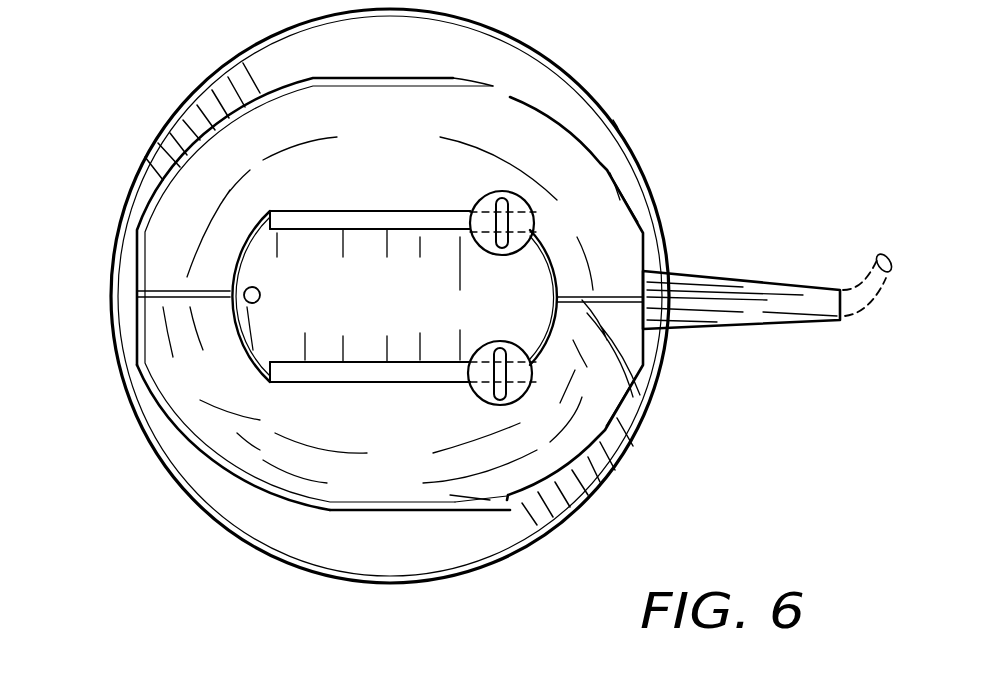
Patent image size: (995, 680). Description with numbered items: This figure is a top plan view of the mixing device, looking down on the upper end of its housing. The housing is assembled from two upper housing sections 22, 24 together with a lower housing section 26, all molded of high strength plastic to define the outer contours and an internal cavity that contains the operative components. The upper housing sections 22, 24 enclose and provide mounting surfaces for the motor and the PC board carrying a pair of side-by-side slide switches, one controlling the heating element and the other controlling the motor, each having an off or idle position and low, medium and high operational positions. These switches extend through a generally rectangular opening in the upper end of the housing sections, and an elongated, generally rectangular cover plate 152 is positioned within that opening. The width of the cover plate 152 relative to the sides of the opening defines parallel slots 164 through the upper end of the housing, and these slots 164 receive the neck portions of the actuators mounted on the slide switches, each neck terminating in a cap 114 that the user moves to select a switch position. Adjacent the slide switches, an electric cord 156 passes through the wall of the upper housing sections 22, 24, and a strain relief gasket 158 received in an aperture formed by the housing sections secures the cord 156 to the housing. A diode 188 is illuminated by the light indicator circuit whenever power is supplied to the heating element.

The upper housing section 22 is at (429, 510).
The upper housing section 24 is at (320, 80).
The lower housing section 26 is at (290, 524).
The cap 114 is at (533, 215).
The cover plate 152 is at (320, 238).
The electric cord 156 is at (862, 275).
The strain relief gasket 158 is at (788, 308).
The slots 164 is at (448, 222).
The diode 188 is at (248, 303).